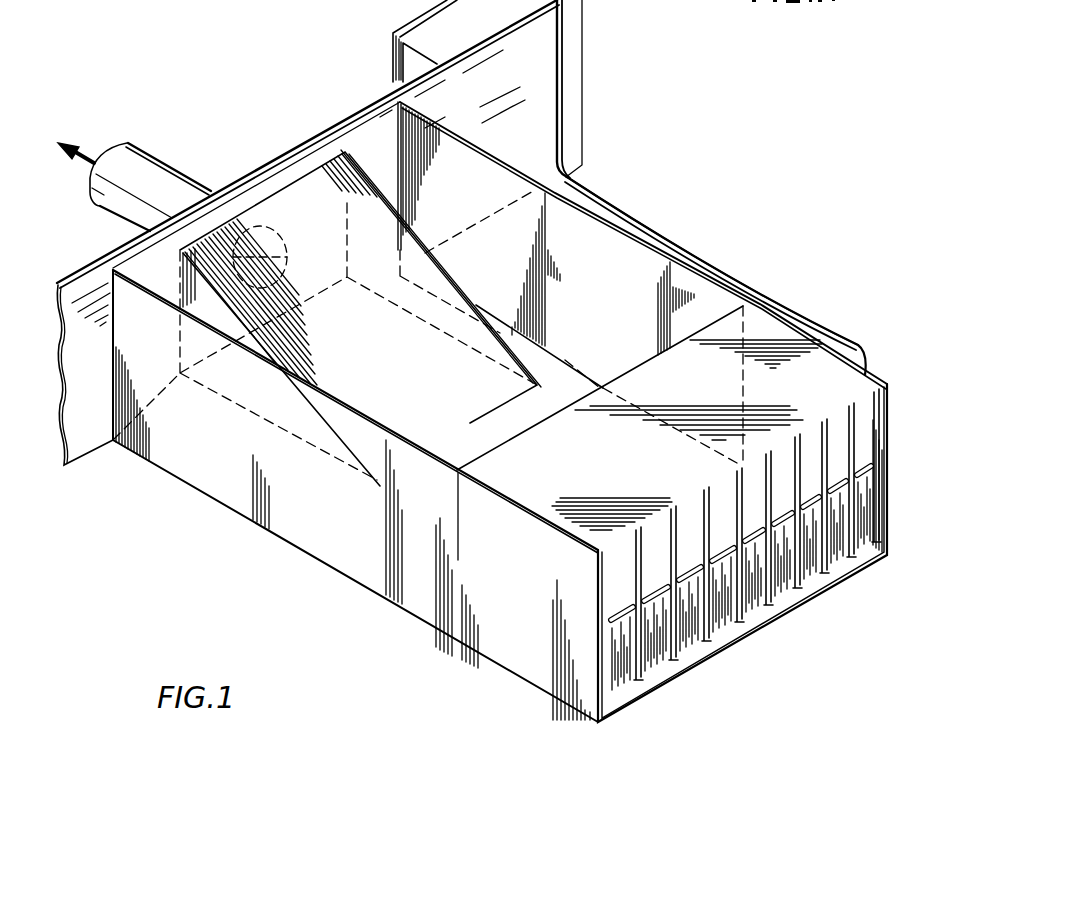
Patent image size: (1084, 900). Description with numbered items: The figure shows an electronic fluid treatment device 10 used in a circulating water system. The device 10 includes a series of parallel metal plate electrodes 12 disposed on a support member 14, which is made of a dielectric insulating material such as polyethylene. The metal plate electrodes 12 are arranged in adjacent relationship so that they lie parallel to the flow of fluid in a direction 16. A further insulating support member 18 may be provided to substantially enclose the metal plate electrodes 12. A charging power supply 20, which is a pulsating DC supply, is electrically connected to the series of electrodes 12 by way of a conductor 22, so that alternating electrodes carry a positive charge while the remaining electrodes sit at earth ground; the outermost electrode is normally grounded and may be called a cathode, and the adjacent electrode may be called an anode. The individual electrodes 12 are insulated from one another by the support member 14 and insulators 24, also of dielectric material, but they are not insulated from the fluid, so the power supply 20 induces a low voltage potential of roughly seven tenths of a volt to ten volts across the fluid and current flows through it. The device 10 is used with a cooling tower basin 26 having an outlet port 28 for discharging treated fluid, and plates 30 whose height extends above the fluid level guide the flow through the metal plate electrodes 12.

The electronic fluid treatment device 10 is at (472, 361).
The metal plate electrodes 12 is at (701, 645).
The support member 14 is at (838, 578).
The direction of fluid flow 16 is at (87, 157).
The further insulating support member 18 is at (817, 383).
The charging power supply 20 is at (480, 26).
The conductor 22 is at (650, 231).
The insulators 24 is at (612, 625).
The cooling tower basin 26 is at (582, 113).
The outlet port 28 is at (163, 160).
The plates 30 is at (433, 462).